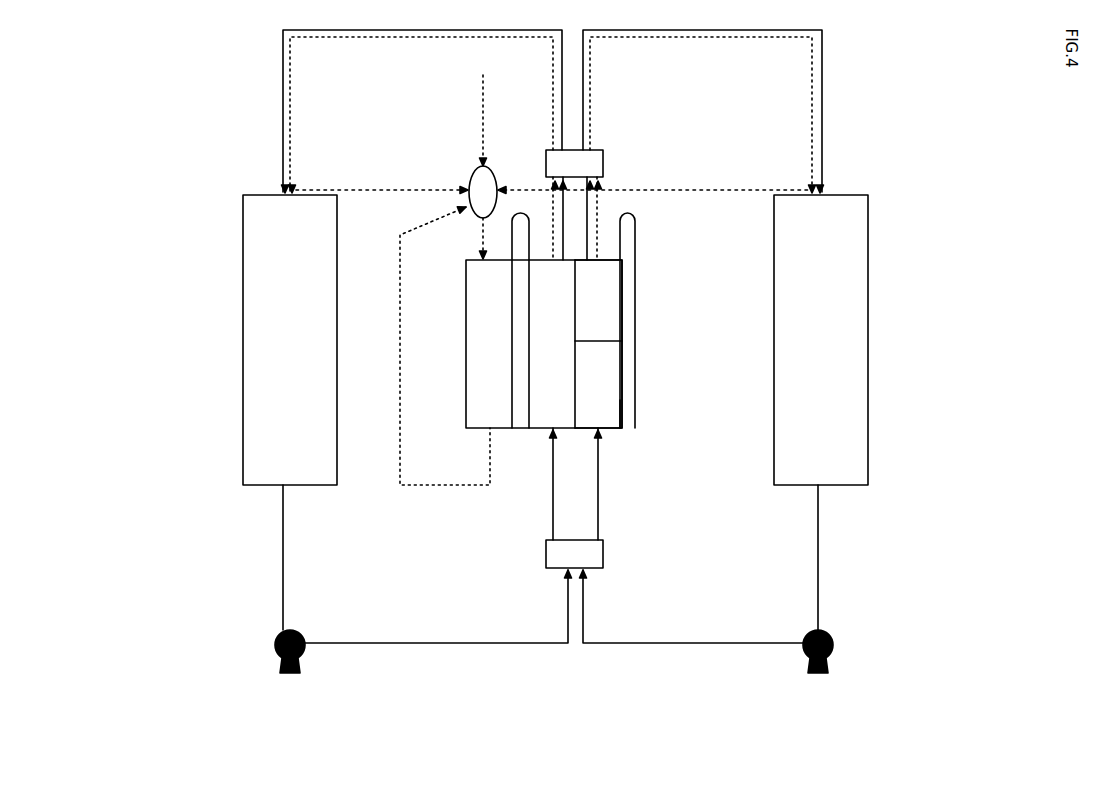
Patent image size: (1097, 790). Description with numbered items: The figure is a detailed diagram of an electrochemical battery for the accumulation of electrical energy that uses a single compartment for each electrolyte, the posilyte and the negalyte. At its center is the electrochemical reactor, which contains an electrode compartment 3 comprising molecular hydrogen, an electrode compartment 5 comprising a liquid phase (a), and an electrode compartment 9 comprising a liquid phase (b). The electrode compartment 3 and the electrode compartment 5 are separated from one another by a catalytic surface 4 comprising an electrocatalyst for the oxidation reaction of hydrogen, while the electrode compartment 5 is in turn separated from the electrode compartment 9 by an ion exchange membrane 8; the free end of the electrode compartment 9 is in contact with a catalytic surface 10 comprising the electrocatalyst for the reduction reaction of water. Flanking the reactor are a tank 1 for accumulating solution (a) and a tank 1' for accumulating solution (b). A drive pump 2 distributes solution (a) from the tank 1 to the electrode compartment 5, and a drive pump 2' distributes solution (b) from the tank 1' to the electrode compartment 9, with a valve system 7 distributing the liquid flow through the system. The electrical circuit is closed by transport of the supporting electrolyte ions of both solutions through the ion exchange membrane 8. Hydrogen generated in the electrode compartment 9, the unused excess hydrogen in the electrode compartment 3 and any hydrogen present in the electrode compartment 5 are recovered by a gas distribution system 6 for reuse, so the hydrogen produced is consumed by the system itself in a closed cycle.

The tank 1 is at (232, 340).
The tank 1' is at (864, 340).
The drive pump 2 is at (347, 680).
The drive pump 2' is at (764, 679).
The electrode compartment 3 is at (490, 377).
The catalytic surface 4 is at (522, 407).
The electrode compartment 5 is at (552, 403).
The gas distribution system 6 is at (480, 185).
The valve system 7 is at (575, 163).
The ion exchange membrane 8 is at (622, 341).
The electrode compartment 9 is at (600, 375).
The catalytic surface 10 is at (625, 418).